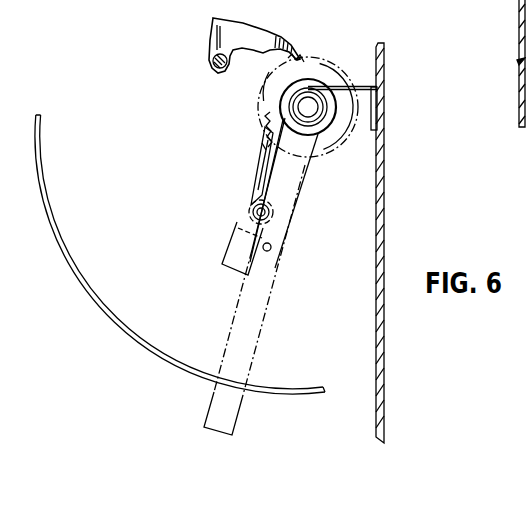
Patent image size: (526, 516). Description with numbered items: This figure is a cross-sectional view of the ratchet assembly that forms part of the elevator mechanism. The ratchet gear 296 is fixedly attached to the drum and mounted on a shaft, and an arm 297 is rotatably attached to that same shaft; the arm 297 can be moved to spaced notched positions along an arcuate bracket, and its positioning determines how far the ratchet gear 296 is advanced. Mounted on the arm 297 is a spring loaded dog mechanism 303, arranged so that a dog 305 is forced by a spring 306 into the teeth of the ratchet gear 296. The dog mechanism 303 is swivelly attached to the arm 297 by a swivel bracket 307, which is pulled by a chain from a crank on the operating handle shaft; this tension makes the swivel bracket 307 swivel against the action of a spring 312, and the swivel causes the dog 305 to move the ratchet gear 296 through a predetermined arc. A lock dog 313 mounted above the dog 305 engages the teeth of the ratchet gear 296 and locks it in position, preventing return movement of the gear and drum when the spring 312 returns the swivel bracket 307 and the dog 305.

The lock dog 313 is at (262, 8).
The ratchet gear 296 is at (311, 72).
The spring 312 is at (363, 87).
The arm 297 is at (272, 292).
The spring loaded dog mechanism 303 is at (241, 192).
The dog 305 is at (264, 156).
The spring 306 is at (236, 230).
The swivel bracket 307 is at (235, 258).